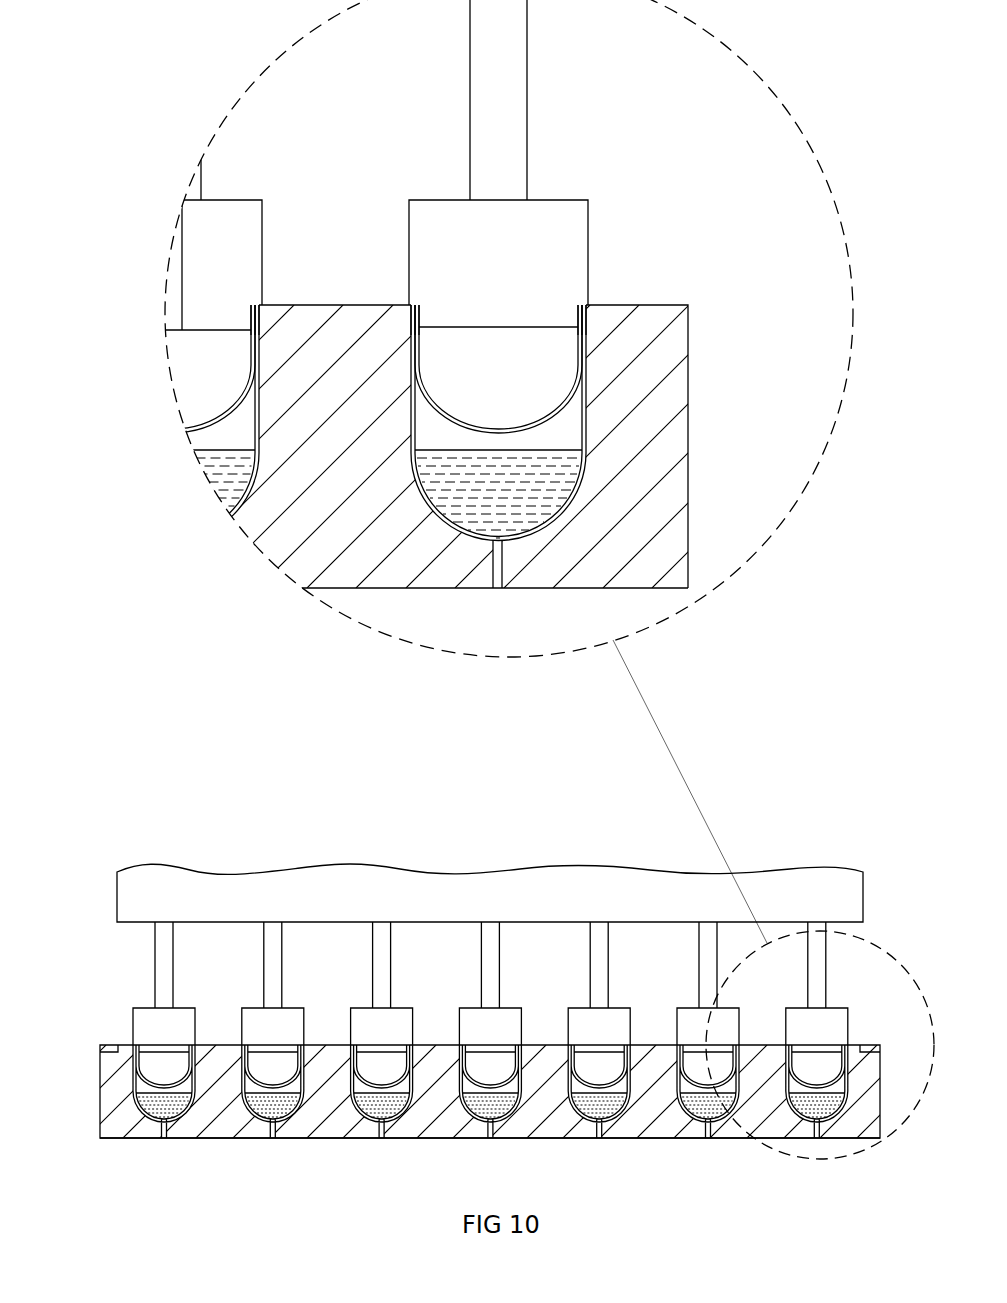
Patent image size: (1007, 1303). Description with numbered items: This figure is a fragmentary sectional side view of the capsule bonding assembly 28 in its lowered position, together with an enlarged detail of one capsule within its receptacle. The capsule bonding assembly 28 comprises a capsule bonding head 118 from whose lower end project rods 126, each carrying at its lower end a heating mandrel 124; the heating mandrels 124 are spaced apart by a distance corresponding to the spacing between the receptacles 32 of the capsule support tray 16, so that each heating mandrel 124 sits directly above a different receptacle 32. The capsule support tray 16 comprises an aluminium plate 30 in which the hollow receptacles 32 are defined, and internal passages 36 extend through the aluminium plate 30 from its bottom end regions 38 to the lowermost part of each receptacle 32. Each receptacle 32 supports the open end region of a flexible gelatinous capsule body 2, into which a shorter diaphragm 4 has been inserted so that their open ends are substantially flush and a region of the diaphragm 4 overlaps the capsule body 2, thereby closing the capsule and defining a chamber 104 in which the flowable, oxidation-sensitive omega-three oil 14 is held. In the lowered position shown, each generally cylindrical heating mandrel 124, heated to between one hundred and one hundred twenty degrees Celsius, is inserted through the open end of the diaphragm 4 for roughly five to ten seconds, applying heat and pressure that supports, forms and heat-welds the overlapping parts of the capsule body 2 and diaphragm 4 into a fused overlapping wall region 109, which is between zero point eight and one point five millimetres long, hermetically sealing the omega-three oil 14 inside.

The capsule body 2 is at (592, 387).
The diaphragm 4 is at (441, 392).
The Omega-3 oil 14 is at (438, 480).
The capsule support tray 16 is at (97, 1097).
The capsule bonding assembly 28 is at (627, 193).
The aluminium plate 30 is at (673, 462).
The receptacle 32 is at (563, 517).
The internal passage 36 is at (503, 570).
The bottom end region 38 is at (362, 590).
The chamber 104 is at (552, 435).
The fused overlapping wall region 109 is at (588, 320).
The capsule bonding head 118 is at (205, 890).
The heating mandrel 124 is at (557, 253).
The rod 126 is at (500, 123).